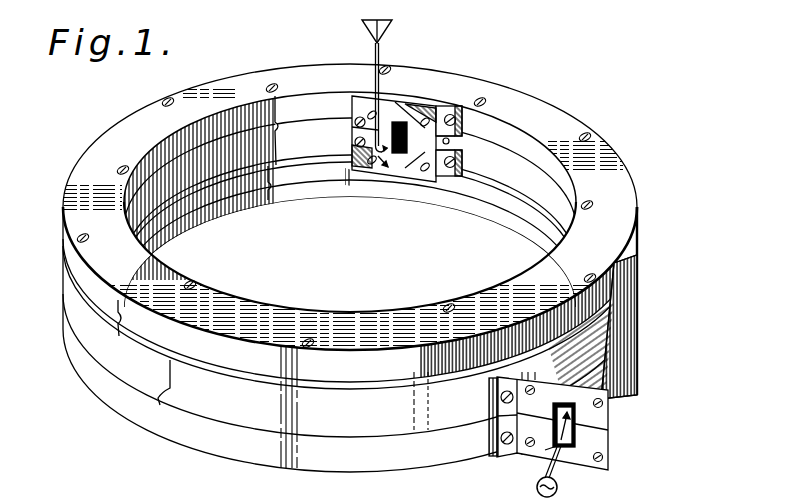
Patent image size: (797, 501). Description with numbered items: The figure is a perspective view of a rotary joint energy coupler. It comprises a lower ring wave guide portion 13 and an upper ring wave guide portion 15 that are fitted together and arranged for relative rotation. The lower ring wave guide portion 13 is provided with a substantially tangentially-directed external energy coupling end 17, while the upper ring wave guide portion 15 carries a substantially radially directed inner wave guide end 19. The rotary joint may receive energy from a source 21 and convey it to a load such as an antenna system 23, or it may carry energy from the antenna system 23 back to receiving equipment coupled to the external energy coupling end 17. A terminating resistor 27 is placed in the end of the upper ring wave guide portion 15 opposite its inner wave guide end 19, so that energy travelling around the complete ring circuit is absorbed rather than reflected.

The lower ring wave guide portion 13 is at (275, 196).
The upper ring wave guide portion 15 is at (276, 133).
The external energy coupling end 17 is at (612, 440).
The inner wave guide end 19 is at (405, 105).
The source 21 is at (557, 492).
The antenna system 23 is at (380, 43).
The terminating resistor 27 is at (404, 487).